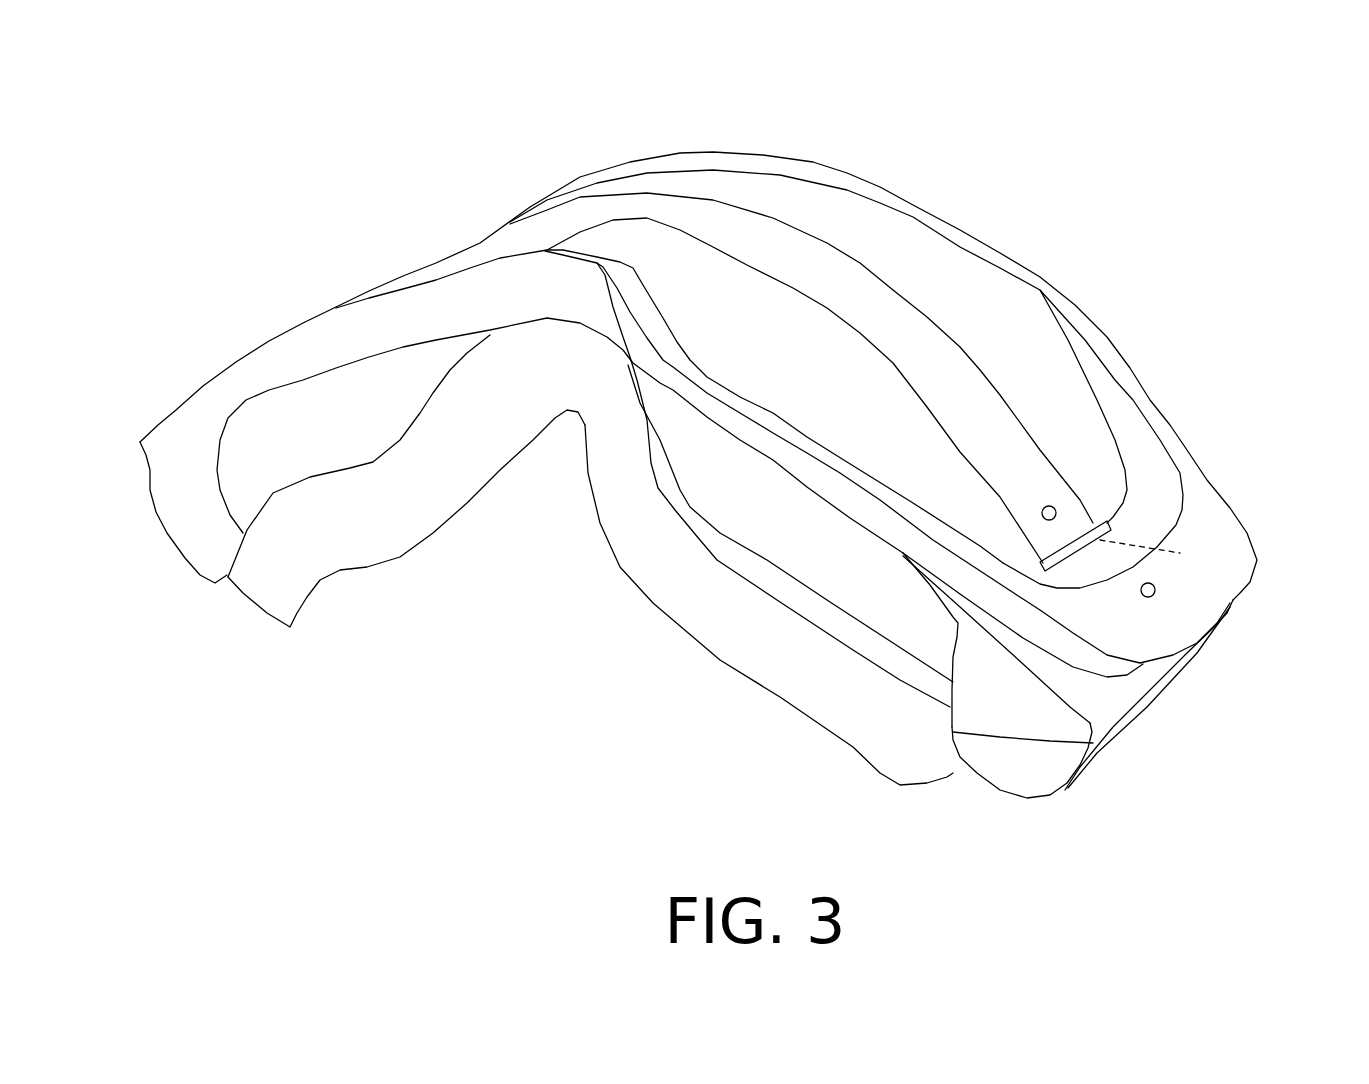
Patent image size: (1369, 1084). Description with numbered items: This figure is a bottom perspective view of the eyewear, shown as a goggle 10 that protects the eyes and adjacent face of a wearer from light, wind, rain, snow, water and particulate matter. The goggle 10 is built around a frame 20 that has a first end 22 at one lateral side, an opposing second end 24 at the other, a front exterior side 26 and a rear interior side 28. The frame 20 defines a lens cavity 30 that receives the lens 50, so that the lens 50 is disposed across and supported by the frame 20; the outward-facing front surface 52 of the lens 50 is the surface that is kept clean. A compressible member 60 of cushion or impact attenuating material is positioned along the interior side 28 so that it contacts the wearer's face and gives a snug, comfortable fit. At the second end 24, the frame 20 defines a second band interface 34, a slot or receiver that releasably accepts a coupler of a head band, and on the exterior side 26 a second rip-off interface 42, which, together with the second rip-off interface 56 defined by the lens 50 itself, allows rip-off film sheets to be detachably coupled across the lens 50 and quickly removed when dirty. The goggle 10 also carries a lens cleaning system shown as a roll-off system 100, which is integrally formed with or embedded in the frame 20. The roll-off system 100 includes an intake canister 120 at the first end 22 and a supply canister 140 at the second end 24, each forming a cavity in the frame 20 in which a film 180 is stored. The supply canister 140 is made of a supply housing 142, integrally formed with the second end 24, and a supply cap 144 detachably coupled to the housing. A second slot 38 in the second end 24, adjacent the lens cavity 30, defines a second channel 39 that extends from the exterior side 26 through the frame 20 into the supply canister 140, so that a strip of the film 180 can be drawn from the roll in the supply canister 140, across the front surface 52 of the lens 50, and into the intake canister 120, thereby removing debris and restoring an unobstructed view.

The goggle 10 is at (182, 117).
The frame 20 is at (797, 143).
The first end 22 is at (128, 472).
The intake canister 120 is at (170, 550).
The second end 24 is at (1280, 580).
The exterior side 26 is at (1110, 388).
The lens cavity 30 is at (888, 210).
The lens 50 is at (958, 283).
The front surface 52 is at (1020, 333).
The second rip-off interface 56 is at (1052, 505).
The second slot 38 is at (1110, 523).
The second channel 39 is at (1159, 556).
The second band interface 34 is at (1203, 633).
The second rip-off interface 42 is at (1155, 598).
The compressible member 60 is at (687, 610).
The interior side 28 is at (900, 552).
The roll-off system 100 is at (1008, 815).
The supply canister 140 is at (1113, 753).
The supply housing 142 is at (967, 705).
The supply cap 144 is at (1063, 777).
The film 180 is at (790, 260).